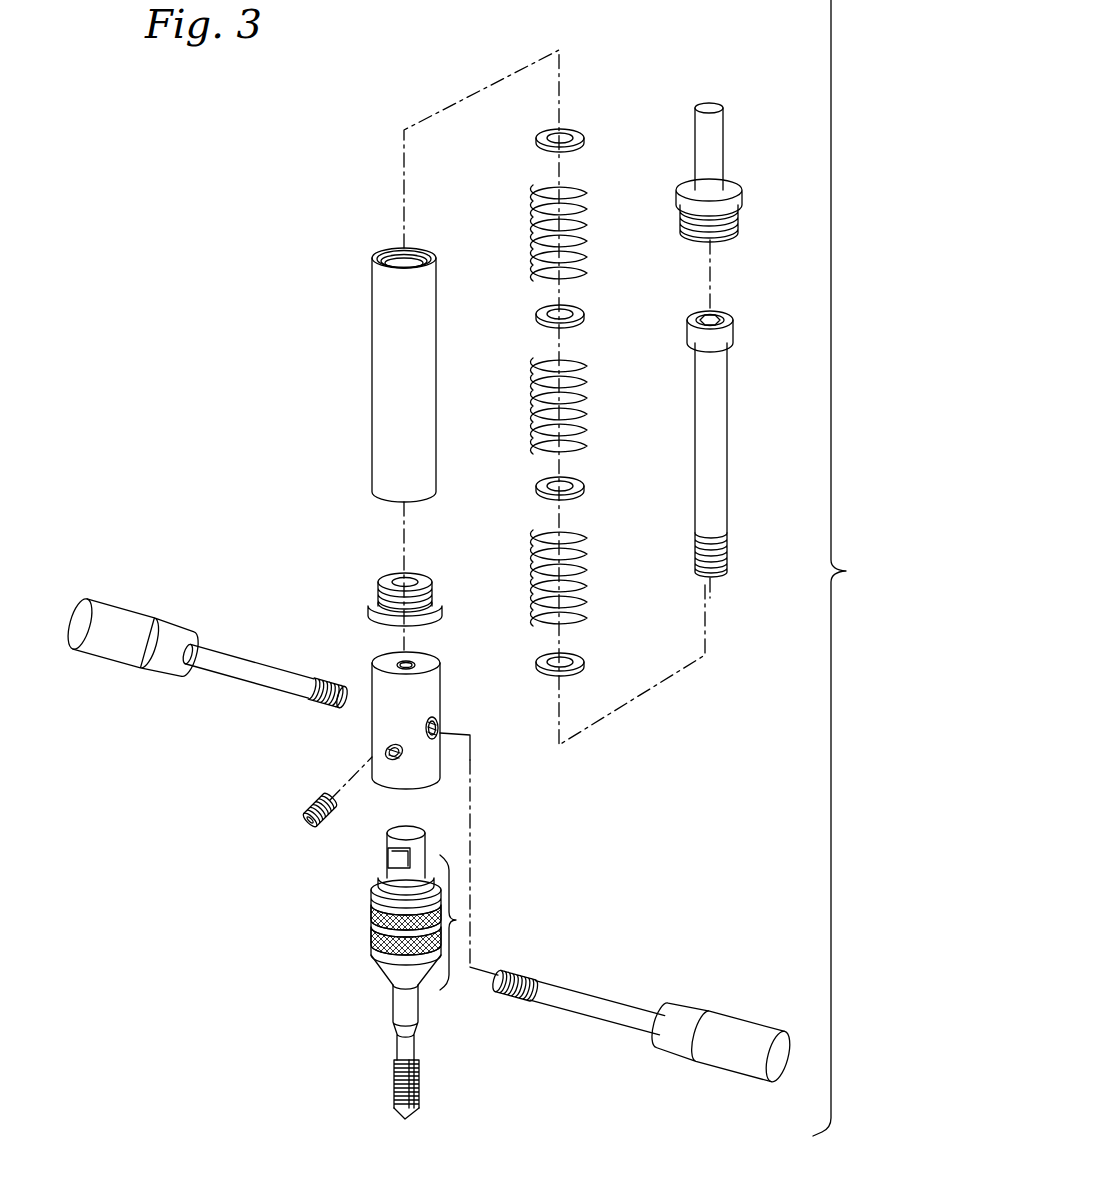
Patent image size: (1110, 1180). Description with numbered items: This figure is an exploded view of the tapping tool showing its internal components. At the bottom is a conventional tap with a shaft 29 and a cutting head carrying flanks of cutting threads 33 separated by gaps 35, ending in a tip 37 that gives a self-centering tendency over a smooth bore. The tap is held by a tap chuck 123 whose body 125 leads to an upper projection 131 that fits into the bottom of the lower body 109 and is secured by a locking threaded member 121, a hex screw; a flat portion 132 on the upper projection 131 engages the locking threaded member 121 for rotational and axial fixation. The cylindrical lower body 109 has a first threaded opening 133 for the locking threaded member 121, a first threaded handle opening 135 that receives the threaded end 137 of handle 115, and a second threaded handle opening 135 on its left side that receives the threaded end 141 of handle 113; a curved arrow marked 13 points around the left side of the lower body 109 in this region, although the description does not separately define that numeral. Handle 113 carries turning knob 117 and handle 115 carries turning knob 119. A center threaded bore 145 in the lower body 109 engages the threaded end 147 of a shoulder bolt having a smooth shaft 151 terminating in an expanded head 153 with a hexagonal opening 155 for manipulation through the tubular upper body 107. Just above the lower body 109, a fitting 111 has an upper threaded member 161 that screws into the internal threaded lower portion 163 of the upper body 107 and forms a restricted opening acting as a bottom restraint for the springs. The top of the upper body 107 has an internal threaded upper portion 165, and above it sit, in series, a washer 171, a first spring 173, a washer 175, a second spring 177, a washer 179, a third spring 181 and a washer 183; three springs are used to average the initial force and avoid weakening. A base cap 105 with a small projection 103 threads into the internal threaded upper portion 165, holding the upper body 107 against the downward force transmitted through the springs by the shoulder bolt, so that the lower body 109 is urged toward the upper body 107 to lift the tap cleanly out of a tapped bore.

The tap holder assembly 13 is at (362, 740).
The shaft 29 is at (396, 1000).
The cutting threads 33 is at (395, 1076).
The gaps 35 is at (416, 1076).
The tip 37 is at (404, 1116).
The projection 103 is at (723, 148).
The base cap 105 is at (731, 187).
The upper body 107 is at (434, 398).
The lower body 109 is at (438, 695).
The fitting 111 is at (380, 605).
The handle 113 is at (261, 663).
The handle 115 is at (574, 988).
The turning knob 117 is at (128, 614).
The turning knob 119 is at (731, 1022).
The locking threaded member 121 is at (310, 818).
The tap chuck 123 is at (456, 920).
The body 125 is at (372, 883).
The upper projection 131 is at (393, 836).
The flat portion 132 is at (392, 858).
The first threaded opening 133 is at (400, 756).
The threaded handle opening 135 is at (440, 730).
The threaded end 137 is at (519, 968).
The threaded end 141 is at (331, 685).
The center threaded bore 145 is at (412, 662).
The threaded end 147 is at (727, 556).
The smooth shaft 151 is at (727, 436).
The expanded head 153 is at (736, 330).
The hexagonal opening 155 is at (714, 318).
The upper threaded member 161 is at (438, 588).
The internal threaded lower portion 163 is at (380, 508).
The internal threaded upper portion 165 is at (392, 258).
The washer 171 is at (584, 136).
The first spring 173 is at (589, 202).
The washer 175 is at (584, 313).
The second spring 177 is at (590, 402).
The washer 179 is at (584, 485).
The third spring 181 is at (590, 549).
The washer 183 is at (585, 661).